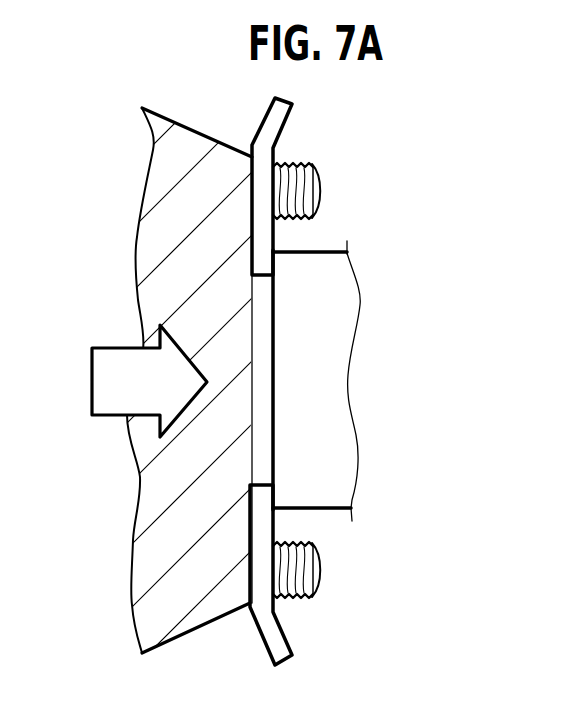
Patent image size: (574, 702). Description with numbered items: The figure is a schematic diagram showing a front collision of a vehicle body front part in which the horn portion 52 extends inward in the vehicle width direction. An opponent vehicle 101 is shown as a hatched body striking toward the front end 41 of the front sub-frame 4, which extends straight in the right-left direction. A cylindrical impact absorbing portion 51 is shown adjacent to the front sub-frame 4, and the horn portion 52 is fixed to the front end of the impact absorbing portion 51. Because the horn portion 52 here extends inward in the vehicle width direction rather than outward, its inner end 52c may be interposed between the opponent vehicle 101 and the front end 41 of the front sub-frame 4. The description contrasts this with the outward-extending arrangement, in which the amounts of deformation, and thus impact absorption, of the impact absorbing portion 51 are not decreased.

The opponent vehicle 101 is at (182, 147).
The front sub-frame 4 is at (318, 310).
The front end 41 is at (258, 393).
The horn portion 52 is at (275, 123).
The inner end 52c is at (270, 272).
The impact absorbing portion 51 is at (317, 190).